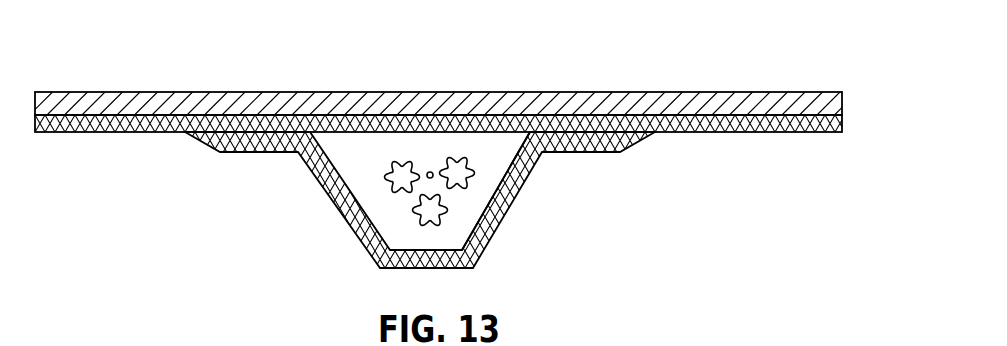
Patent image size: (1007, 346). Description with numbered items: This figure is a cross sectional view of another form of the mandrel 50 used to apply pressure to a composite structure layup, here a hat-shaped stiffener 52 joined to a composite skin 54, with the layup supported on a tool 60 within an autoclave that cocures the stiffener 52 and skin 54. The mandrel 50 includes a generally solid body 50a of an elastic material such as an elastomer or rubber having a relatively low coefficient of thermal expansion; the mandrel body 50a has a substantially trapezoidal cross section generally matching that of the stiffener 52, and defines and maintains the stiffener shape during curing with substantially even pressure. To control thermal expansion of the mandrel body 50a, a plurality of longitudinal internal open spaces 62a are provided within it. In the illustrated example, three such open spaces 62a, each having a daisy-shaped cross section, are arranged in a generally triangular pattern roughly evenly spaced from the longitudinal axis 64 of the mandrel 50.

The tool 60 is at (215, 100).
The composite skin 54 is at (697, 132).
The mandrel 50 is at (352, 168).
The mandrel body 50a is at (498, 160).
The hat-shaped stiffener 52 is at (487, 237).
The longitudinal internal open spaces 62a is at (408, 233).
The longitudinal axis 64 is at (433, 161).